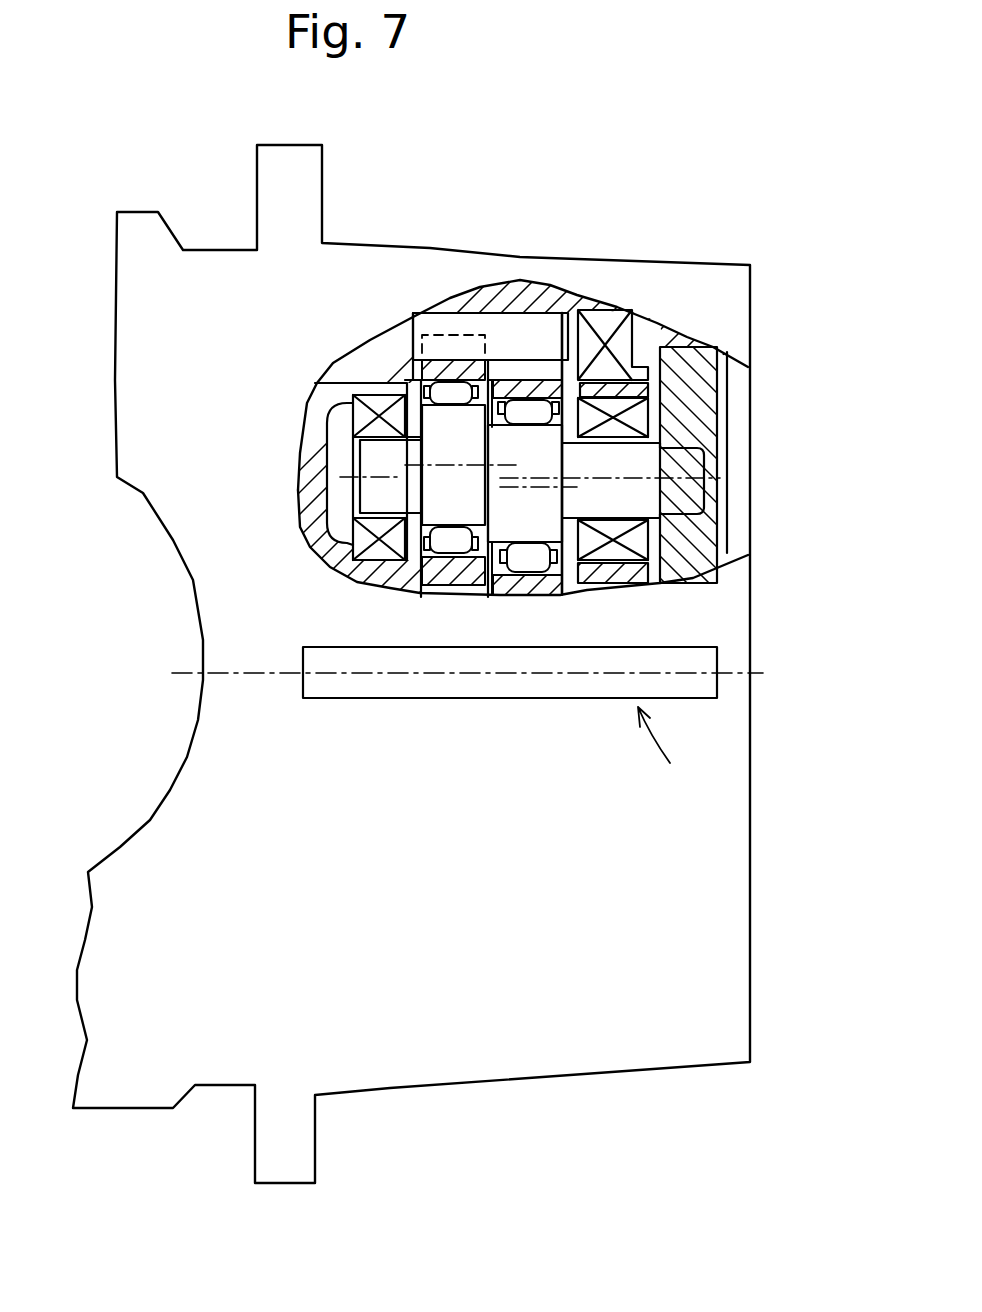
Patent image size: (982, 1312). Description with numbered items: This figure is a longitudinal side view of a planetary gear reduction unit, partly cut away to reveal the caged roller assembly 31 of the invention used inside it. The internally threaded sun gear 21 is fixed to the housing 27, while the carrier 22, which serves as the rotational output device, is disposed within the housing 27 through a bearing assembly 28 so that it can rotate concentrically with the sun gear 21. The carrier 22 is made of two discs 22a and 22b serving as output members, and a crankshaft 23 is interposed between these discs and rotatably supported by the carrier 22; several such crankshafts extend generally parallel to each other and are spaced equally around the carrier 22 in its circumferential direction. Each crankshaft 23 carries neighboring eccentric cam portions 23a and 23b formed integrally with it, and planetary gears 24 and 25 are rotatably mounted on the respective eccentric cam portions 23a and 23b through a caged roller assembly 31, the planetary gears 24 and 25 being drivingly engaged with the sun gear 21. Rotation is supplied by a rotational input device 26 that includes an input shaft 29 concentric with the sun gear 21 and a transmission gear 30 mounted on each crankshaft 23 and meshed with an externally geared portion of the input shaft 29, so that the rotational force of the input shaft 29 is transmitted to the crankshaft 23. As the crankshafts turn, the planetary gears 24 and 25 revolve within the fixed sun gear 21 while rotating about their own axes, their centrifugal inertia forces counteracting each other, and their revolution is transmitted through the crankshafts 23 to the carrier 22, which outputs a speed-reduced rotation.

The sun gear 21 is at (540, 400).
The carrier 22 is at (330, 380).
The disc 22a is at (307, 452).
The disc 22b is at (713, 347).
The crankshaft 23 is at (687, 578).
The eccentric cam portion 23a is at (457, 508).
The eccentric cam portion 23b is at (524, 522).
The planetary gear 24 is at (487, 332).
The planetary gear 25 is at (560, 318).
The rotational input device 26 is at (670, 763).
The housing 27 is at (225, 285).
The bearing assembly 28 is at (650, 313).
The input shaft 29 is at (683, 700).
The transmission gear 30 is at (698, 400).
The caged roller assembly 31 is at (443, 387).